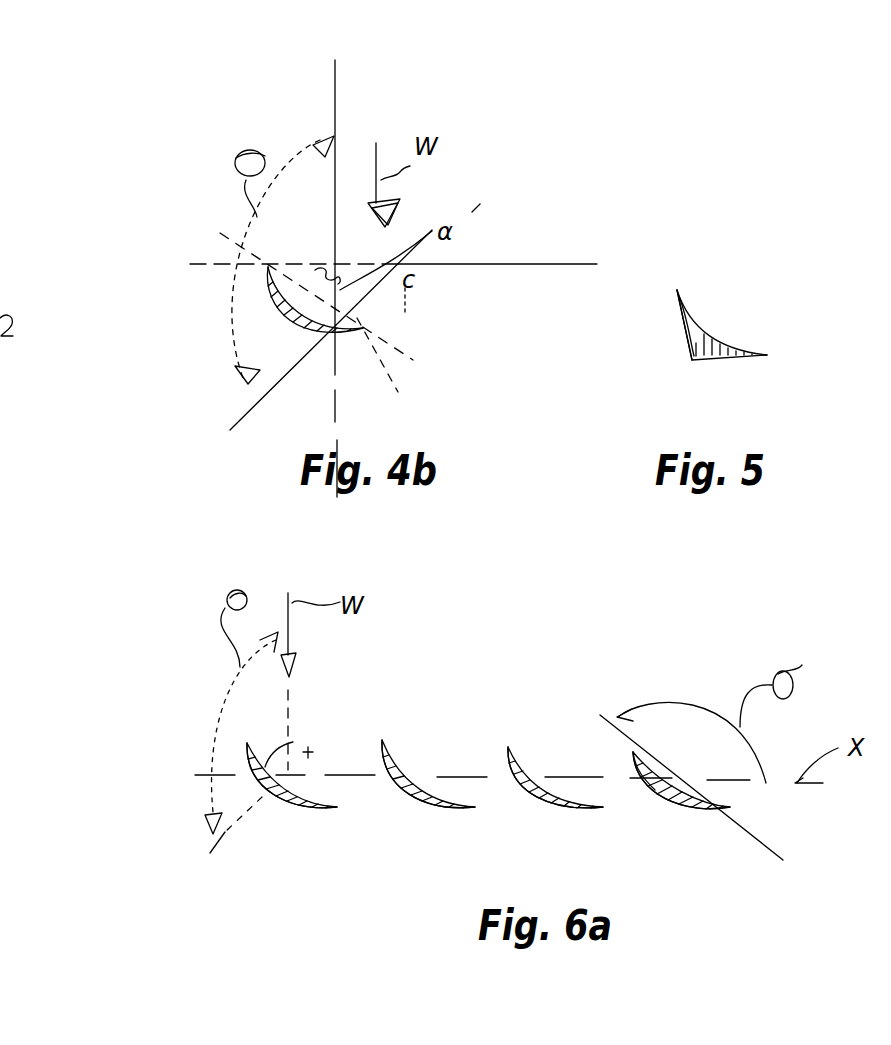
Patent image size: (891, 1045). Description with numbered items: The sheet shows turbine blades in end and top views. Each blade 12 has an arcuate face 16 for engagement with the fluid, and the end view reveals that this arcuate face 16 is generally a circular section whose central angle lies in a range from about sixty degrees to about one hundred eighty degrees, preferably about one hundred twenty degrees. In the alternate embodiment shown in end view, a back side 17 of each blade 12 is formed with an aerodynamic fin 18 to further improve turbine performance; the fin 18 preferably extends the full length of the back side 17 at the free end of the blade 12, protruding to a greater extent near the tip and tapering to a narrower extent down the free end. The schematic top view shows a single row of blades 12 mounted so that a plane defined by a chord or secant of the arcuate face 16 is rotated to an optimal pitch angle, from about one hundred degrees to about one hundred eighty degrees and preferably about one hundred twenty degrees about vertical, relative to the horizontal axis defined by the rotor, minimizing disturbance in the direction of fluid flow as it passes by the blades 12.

In FIG. 6A, the blade 12 is at (237, 737).
In FIG. 4B, the arcuate face 16 is at (350, 323).
In FIG. 6A, the arcuate face 16 is at (695, 749).
In FIG. 5, the back side 17 is at (742, 358).
In FIG. 6A, the back side 17 is at (658, 757).
In FIG. 5, the aerodynamic fin 18 is at (690, 355).